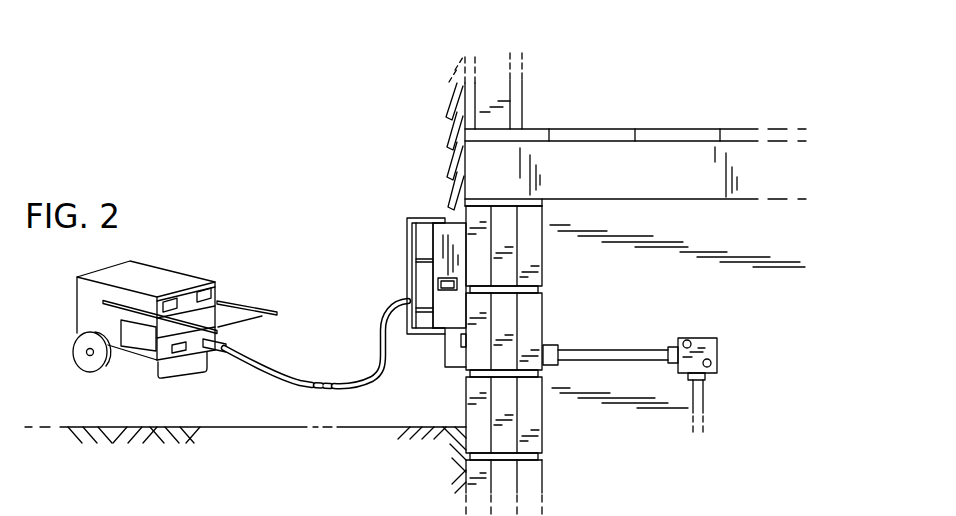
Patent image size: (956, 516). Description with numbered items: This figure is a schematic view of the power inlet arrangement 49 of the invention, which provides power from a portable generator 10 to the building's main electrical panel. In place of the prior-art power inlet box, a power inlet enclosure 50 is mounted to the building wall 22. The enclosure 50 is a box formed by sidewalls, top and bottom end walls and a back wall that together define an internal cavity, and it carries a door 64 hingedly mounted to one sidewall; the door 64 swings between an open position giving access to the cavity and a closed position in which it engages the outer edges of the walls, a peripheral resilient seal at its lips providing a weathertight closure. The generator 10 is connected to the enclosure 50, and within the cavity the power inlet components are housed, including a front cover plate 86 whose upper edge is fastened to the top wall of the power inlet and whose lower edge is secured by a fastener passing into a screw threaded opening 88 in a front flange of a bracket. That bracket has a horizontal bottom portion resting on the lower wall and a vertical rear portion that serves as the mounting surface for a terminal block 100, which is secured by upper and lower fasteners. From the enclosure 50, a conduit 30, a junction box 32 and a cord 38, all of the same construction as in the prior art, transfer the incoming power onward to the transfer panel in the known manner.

The generator 10 is at (150, 239).
The building wall 22 is at (466, 394).
The conduit 30 is at (593, 348).
The junction box 32 is at (693, 336).
The cord 38 is at (703, 404).
The power inlet arrangement 49 is at (365, 295).
The power inlet enclosure 50 is at (432, 210).
The door 64 is at (408, 243).
The front cover plate 86 is at (368, 375).
The screw threaded opening 88 is at (216, 353).
The terminal block 100 is at (458, 369).